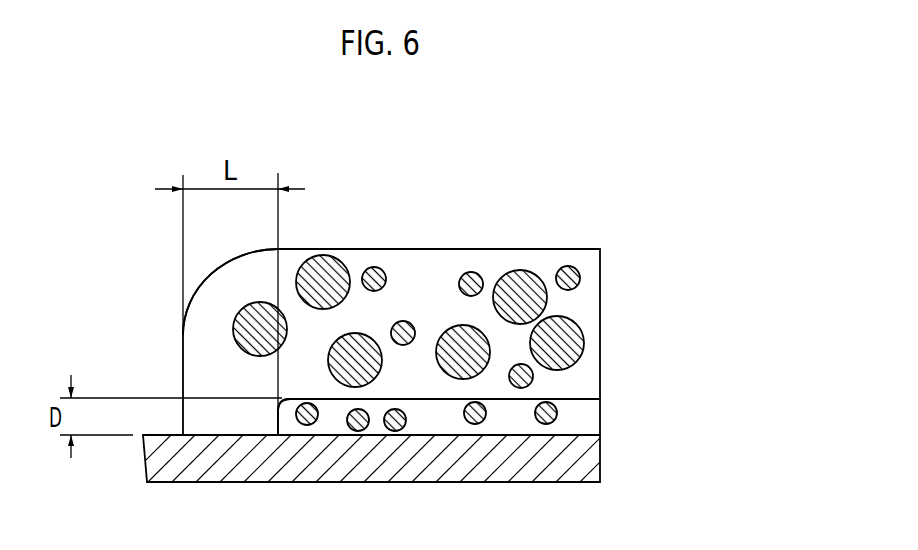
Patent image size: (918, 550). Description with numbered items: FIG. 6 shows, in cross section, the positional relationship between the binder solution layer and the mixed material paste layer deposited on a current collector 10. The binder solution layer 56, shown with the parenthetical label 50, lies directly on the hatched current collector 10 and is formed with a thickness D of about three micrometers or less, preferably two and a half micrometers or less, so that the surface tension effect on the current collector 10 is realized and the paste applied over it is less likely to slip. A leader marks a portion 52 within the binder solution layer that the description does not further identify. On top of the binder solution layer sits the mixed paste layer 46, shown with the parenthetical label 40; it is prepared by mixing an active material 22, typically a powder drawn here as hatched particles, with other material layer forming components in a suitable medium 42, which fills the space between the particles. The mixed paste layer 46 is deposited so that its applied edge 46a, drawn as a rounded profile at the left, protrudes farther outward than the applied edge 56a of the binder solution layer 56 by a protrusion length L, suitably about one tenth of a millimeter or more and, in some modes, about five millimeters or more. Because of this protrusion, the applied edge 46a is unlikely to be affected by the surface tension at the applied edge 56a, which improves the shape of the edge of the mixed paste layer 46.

The current collector 10 is at (583, 457).
The active material 22 is at (323, 257).
The first coating 40 is at (411, 315).
The medium 42 is at (422, 262).
The mixed paste layer 46 is at (411, 315).
The applied edge of the mixed paste layer 46a is at (183, 340).
The second coating 50 is at (487, 438).
The matrix of second layer 52 is at (577, 408).
The binder solution layer 56 is at (487, 438).
The applied edge of the binder solution layer 56a is at (280, 416).